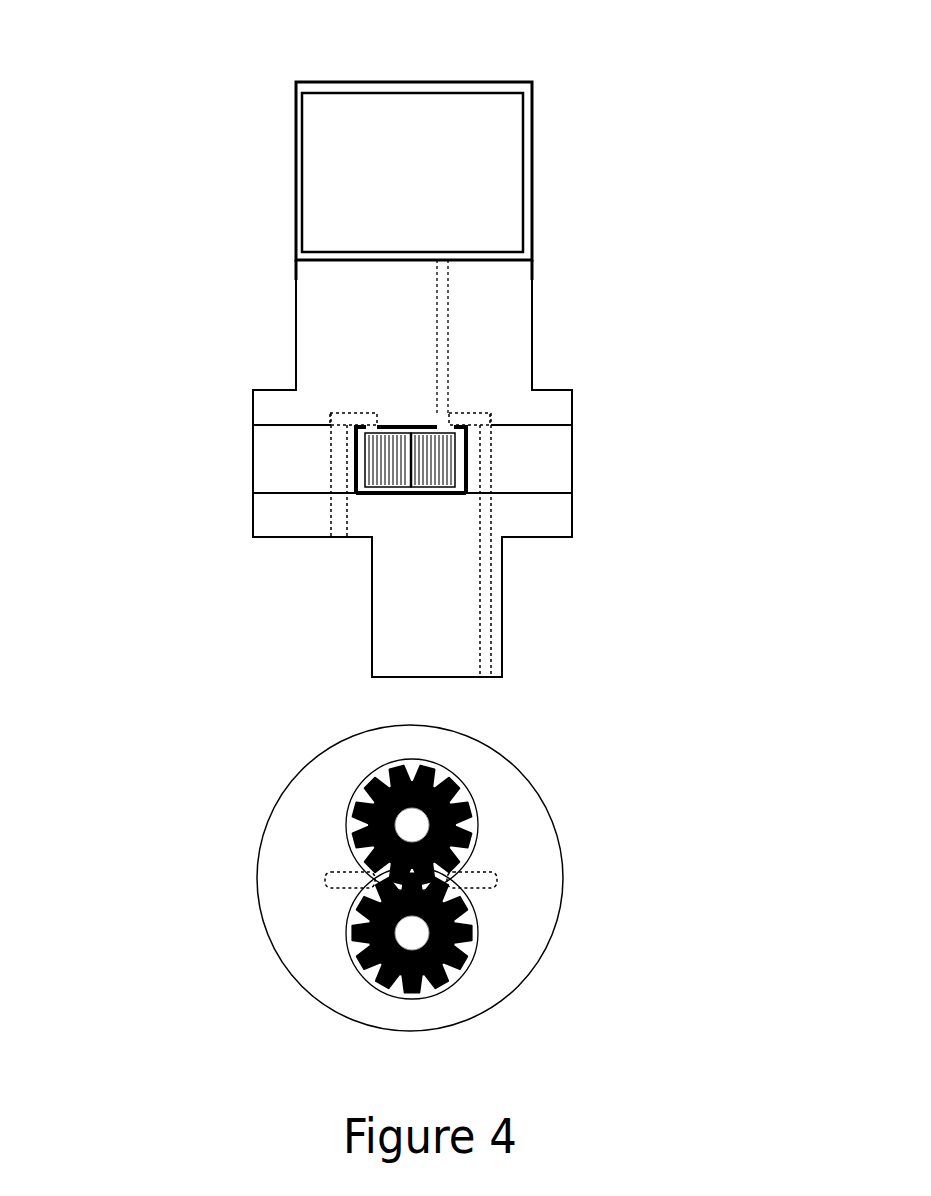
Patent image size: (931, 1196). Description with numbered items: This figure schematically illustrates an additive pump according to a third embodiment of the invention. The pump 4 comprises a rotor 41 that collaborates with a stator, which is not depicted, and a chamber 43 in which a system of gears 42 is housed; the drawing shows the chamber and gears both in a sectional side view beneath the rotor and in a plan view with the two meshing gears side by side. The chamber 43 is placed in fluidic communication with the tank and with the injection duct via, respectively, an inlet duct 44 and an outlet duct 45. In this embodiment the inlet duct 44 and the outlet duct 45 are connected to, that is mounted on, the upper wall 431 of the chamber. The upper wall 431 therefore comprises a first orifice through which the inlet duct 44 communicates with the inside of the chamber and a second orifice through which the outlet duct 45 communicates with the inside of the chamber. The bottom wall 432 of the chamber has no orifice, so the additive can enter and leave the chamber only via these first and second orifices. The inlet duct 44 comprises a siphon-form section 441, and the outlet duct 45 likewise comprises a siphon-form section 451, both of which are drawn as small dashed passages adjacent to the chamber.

The pump 4 is at (665, 122).
The rotor 41 is at (503, 220).
The system of gears 42 is at (410, 470).
The chamber 43 is at (465, 472).
The upper wall 431 is at (423, 418).
The bottom wall 432 is at (440, 500).
The inlet duct 44 is at (338, 451).
The siphon-form section 441 is at (477, 418).
The outlet duct 45 is at (487, 626).
The siphon-form section 451 is at (347, 416).